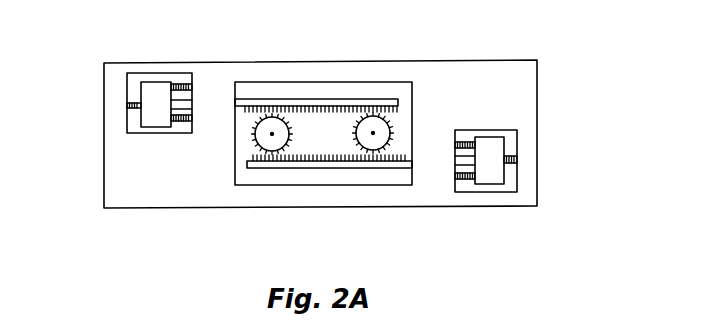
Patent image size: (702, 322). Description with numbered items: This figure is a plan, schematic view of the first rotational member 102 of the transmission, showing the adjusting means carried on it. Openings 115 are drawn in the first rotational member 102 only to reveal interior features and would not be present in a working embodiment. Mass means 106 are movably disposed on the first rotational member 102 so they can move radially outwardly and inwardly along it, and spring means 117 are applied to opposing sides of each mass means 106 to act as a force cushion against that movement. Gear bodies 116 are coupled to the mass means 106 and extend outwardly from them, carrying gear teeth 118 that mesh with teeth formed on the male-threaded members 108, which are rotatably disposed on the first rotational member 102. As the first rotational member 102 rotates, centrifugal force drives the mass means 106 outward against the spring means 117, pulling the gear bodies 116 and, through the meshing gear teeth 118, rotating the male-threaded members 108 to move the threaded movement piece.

The first rotational member 102 is at (538, 80).
The mass means 106 is at (148, 92).
The male-threaded members 108 is at (264, 138).
The openings 115 is at (152, 73).
The gear bodies 116 is at (284, 99).
The spring means 117 is at (192, 119).
The gear teeth 118 is at (318, 107).